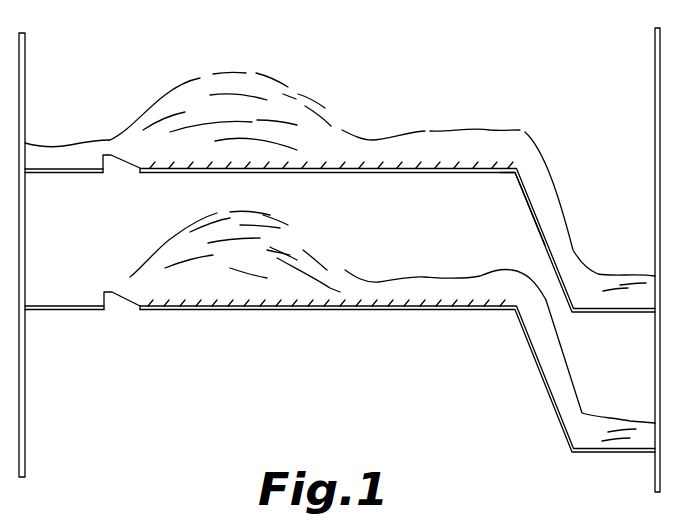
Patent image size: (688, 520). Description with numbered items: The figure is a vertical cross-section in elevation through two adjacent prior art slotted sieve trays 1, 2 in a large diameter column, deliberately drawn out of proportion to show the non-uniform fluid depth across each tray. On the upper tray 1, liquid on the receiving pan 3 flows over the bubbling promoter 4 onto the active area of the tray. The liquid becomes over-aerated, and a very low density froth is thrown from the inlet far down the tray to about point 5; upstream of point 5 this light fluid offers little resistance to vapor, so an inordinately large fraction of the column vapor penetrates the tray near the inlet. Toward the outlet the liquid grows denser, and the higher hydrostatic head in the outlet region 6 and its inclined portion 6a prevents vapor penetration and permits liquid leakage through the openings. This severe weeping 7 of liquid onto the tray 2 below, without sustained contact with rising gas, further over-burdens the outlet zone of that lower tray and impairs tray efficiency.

The tray 1 is at (170, 173).
The tray 2 is at (250, 310).
The receiving pan 3 is at (61, 173).
The bubbling promoter 4 is at (108, 152).
The point 5 is at (349, 173).
The outlet region 6 is at (490, 166).
The inclined plate portion 6a is at (531, 202).
The weeping 7 is at (508, 240).